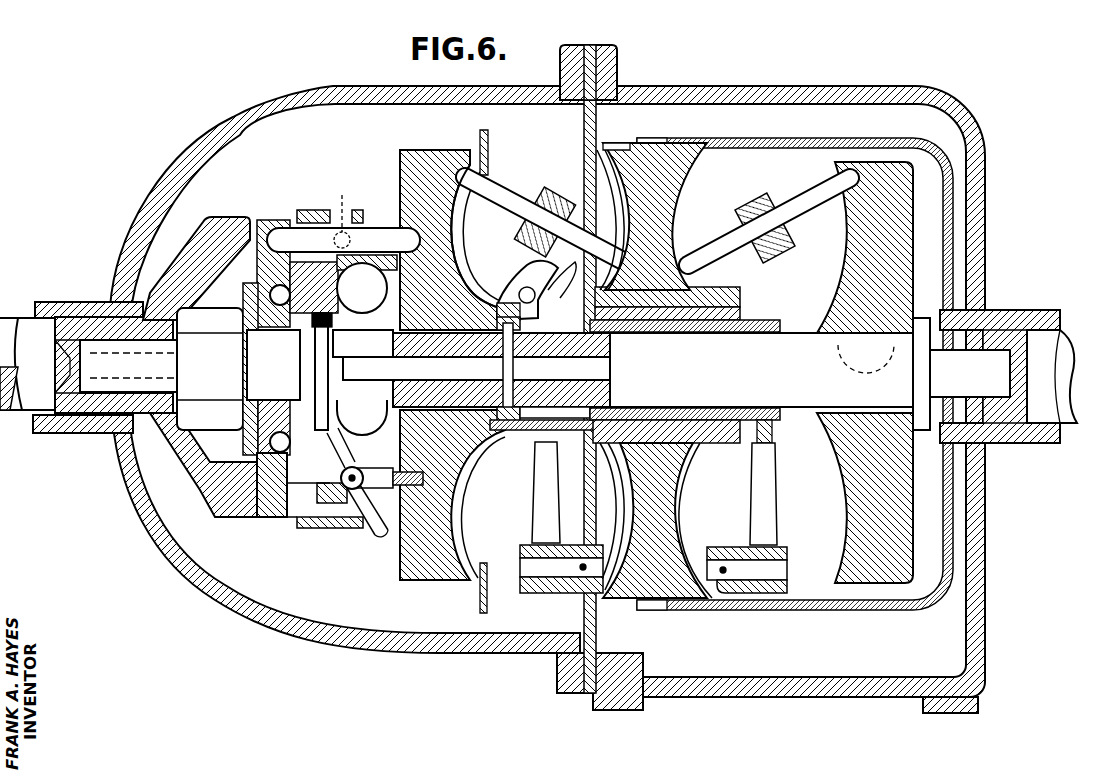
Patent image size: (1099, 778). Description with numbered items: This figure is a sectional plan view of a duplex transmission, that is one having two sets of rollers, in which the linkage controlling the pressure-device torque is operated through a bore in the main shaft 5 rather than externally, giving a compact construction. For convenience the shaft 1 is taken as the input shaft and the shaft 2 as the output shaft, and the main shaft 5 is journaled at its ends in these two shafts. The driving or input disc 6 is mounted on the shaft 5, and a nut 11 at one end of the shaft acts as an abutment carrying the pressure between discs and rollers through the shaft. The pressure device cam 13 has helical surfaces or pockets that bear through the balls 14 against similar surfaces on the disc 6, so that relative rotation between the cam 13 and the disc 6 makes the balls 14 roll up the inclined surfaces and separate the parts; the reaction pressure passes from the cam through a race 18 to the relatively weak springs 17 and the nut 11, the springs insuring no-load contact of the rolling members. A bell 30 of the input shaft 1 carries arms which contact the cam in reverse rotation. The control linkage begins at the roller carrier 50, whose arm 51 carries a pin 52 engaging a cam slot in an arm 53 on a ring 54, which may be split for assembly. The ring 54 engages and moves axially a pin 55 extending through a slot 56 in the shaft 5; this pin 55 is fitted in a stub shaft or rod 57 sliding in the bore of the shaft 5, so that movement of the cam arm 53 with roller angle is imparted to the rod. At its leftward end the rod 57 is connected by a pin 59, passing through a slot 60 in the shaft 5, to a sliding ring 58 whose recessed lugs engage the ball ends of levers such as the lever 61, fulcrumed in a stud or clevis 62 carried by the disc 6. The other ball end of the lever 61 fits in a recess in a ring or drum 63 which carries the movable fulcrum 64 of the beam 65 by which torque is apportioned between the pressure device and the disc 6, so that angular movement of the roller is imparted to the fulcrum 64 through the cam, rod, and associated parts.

The input shaft 1 is at (20, 332).
The output shaft 2 is at (1066, 425).
The main shaft 5 is at (701, 374).
The driving disc 6 is at (445, 580).
The nut 11 is at (202, 413).
The pressure device cam 13 is at (265, 512).
The balls 14 is at (362, 288).
The springs 17 is at (240, 298).
The race 18 is at (273, 392).
The bell 30 is at (210, 242).
The roller carrier 50 is at (543, 203).
The arm 51 is at (517, 253).
The pin 52 is at (540, 300).
The arm 53 is at (512, 280).
The ring 54 is at (522, 325).
The pin 55 is at (512, 395).
The slot 56 is at (565, 402).
The rod 57 is at (520, 362).
The sliding ring 58 is at (340, 420).
The pin 59 is at (328, 393).
The slot 60 is at (363, 343).
The lever 61 is at (355, 527).
The clevis 62 is at (384, 528).
The drum 63 is at (309, 212).
The movable fulcrum 64 is at (340, 214).
The beam 65 is at (372, 240).